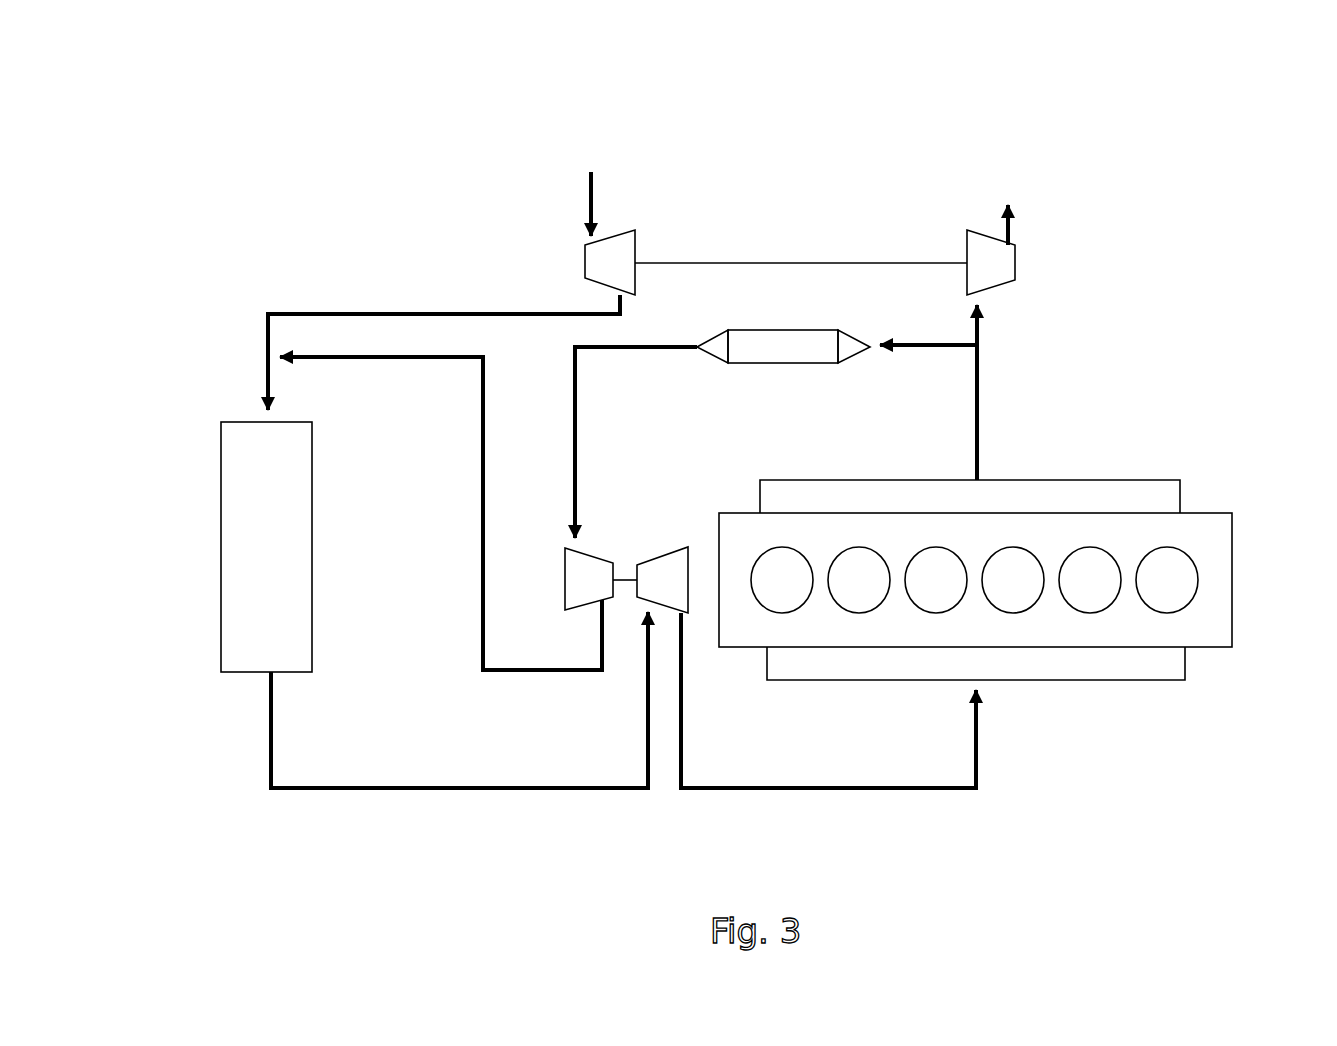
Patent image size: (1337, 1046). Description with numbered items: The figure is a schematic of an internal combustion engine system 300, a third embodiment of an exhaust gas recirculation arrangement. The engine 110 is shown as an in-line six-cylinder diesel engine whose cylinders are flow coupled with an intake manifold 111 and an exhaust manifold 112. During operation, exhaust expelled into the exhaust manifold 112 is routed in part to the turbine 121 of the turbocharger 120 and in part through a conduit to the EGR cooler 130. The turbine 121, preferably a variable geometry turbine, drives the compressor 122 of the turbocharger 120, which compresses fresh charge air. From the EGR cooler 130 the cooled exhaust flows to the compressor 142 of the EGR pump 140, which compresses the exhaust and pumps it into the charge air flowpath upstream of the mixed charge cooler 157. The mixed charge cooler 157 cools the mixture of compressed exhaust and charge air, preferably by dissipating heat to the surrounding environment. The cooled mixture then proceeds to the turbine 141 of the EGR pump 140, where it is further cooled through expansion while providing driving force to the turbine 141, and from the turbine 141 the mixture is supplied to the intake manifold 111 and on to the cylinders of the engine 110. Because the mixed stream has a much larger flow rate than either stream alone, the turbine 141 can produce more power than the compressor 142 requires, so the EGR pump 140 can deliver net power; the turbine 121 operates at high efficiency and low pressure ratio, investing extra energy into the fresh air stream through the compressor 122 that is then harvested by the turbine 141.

The internal combustion engine system 300 is at (338, 128).
The engine 110 is at (1218, 580).
The intake manifold 111 is at (1163, 663).
The exhaust manifold 112 is at (1157, 493).
The turbocharger 120 is at (800, 250).
The turbine 121 is at (998, 265).
The compressor 122 is at (612, 253).
The EGR cooler 130 is at (750, 350).
The EGR pump 140 is at (626, 558).
The turbine 141 is at (665, 578).
The compressor 142 is at (585, 590).
The mixed charge cooler 157 is at (266, 547).